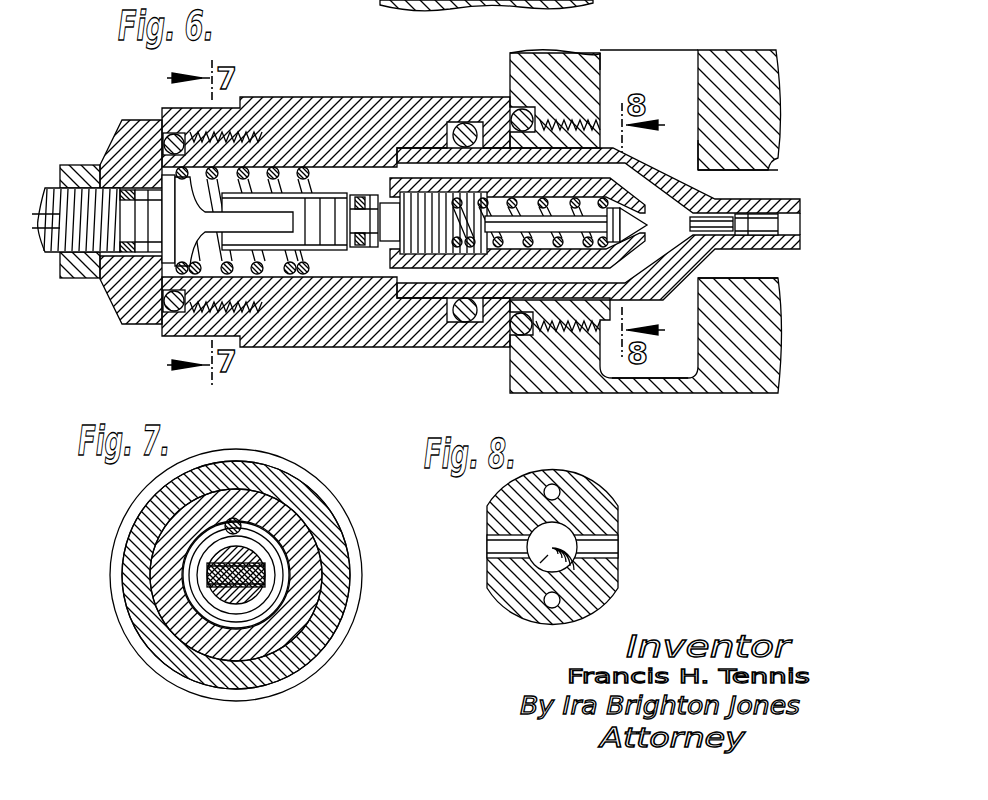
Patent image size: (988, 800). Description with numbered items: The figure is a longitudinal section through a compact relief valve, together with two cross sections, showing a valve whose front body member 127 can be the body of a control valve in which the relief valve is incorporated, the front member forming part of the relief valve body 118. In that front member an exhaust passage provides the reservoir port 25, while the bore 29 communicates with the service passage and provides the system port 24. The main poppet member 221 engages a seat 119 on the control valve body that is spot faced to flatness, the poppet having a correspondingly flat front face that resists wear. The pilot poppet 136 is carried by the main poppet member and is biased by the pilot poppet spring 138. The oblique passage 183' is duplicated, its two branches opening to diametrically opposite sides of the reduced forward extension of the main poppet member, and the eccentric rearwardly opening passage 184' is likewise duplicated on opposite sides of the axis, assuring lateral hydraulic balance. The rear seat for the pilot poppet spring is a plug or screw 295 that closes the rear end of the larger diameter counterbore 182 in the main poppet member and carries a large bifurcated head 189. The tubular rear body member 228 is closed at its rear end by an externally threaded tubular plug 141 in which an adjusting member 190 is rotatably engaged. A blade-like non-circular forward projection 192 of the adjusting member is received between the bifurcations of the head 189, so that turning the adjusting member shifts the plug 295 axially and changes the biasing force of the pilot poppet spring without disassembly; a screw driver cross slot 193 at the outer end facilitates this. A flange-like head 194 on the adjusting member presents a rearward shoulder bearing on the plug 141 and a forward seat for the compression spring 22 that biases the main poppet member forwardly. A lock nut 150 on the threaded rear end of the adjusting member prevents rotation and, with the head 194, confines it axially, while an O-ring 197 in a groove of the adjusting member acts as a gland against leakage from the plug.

In FIG. 6, the tubular plug 141 is at (140, 118).
In FIG. 7, the tubular plug 141 is at (305, 542).
In FIG. 6, the rear body member 228 is at (248, 100).
In FIG. 7, the rear body member 228 is at (268, 450).
In FIG. 6, the compression spring 22 is at (262, 150).
In FIG. 6, the bifurcated head 189 is at (293, 180).
In FIG. 7, the bifurcated head 189 is at (252, 546).
In FIG. 6, the plug or screw 295 is at (383, 200).
In FIG. 6, the eccentric rearwardly opening passage 184' is at (348, 225).
In FIG. 6, the relief valve body 118 is at (480, 85).
In FIG. 6, the reservoir port 25 is at (605, 65).
In FIG. 6, the front body member 127 is at (760, 50).
In FIG. 6, the seat 119 is at (692, 155).
In FIG. 6, the bore 29 is at (780, 170).
In FIG. 6, the pilot poppet spring 138 is at (580, 197).
In FIG. 6, the oblique passage 183' is at (598, 224).
In FIG. 6, the system port 24 is at (765, 268).
In FIG. 6, the main poppet member 221 is at (670, 307).
In FIG. 8, the main poppet member 221 is at (622, 596).
In FIG. 6, the counterbore 182 is at (548, 242).
In FIG. 8, the counterbore 182 is at (538, 562).
In FIG. 6, the pilot poppet 136 is at (512, 226).
In FIG. 8, the pilot poppet 136 is at (560, 530).
In FIG. 6, the blade-like forward projection 192 is at (288, 225).
In FIG. 7, the blade-like forward projection 192 is at (258, 575).
In FIG. 6, the adjusting member 190 is at (145, 180).
In FIG. 6, the screw driver cross slot 193 is at (52, 222).
In FIG. 6, the lock nut 150 is at (65, 280).
In FIG. 6, the flange-like head 194 is at (160, 262).
In FIG. 6, the O-ring 197 is at (160, 295).